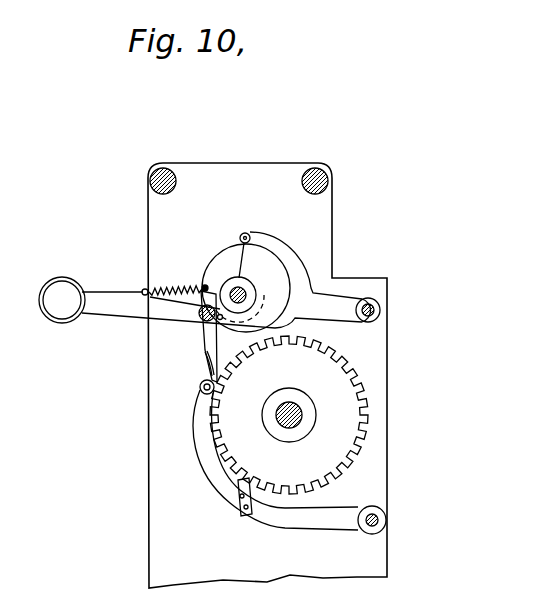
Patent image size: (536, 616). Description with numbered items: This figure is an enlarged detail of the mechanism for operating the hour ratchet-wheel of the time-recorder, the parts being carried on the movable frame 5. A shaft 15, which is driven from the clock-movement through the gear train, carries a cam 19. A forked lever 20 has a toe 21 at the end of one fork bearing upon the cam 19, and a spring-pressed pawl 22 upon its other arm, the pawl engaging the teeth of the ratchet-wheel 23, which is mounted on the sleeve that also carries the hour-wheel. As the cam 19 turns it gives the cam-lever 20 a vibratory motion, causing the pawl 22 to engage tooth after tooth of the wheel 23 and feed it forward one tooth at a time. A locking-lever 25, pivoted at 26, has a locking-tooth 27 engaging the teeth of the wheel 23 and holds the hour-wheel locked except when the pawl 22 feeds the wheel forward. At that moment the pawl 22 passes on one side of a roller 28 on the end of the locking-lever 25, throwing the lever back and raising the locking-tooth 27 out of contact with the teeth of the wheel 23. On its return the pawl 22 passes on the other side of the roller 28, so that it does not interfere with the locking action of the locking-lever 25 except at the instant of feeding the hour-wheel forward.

The movable frame 5 is at (267, 375).
The shaft 15 is at (243, 297).
The cam 19 is at (246, 288).
The forked lever 20 is at (147, 310).
The toe 21 is at (238, 238).
The spring-pressed pawl 22 is at (207, 335).
The ratchet-wheel 23 is at (289, 415).
The locking-lever 25 is at (313, 522).
The pivot 26 is at (386, 520).
The locking-tooth 27 is at (235, 493).
The roller 28 is at (200, 387).